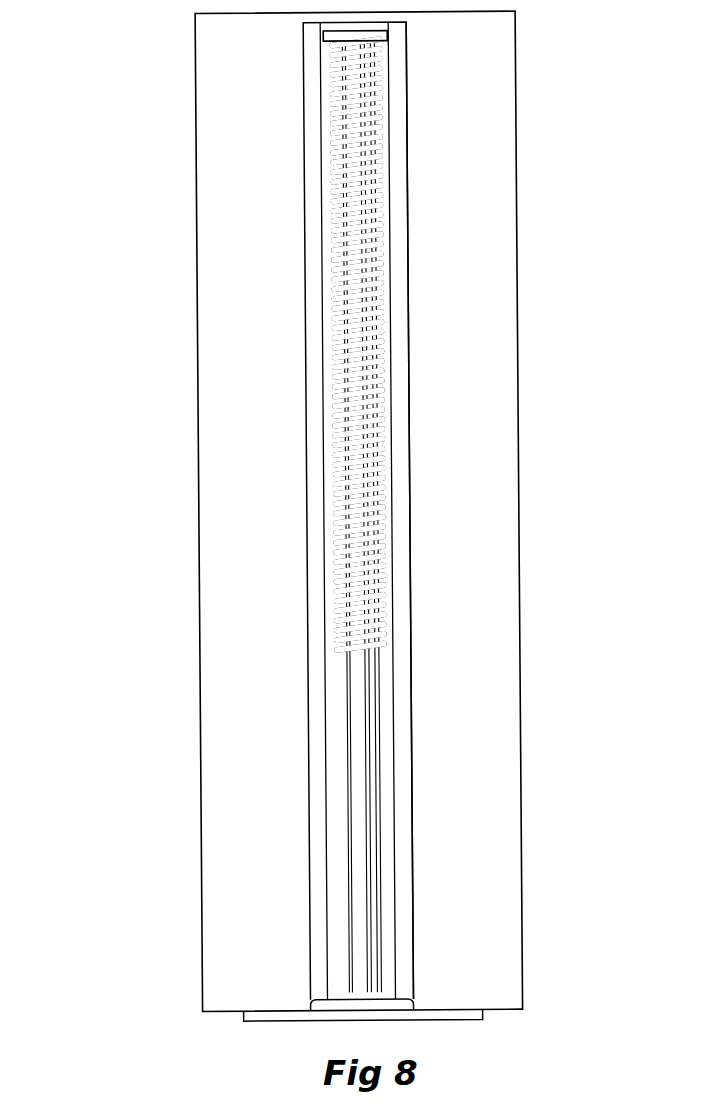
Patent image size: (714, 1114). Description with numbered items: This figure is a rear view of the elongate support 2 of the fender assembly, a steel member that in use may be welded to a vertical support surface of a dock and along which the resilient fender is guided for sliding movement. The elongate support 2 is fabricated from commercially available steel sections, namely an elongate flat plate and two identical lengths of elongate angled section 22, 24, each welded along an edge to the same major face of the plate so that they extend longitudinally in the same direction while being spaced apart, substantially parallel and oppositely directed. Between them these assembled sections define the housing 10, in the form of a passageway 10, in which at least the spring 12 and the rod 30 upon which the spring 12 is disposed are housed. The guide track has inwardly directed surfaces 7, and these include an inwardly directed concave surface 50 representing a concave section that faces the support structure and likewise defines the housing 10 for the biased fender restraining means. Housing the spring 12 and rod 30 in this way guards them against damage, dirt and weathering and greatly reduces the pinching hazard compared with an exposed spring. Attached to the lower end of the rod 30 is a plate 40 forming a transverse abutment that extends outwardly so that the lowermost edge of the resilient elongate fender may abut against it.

The elongate support 2 is at (180, 1106).
The inwardly directed surfaces 7 is at (440, 335).
The housing 10 is at (327, 123).
The spring 12 is at (323, 270).
The elongate angled section 22 is at (432, 602).
The elongate angled section 24 is at (275, 478).
The rod 30 is at (328, 362).
The plate 40 is at (447, 1021).
The inwardly directed concave surface 50 is at (388, 158).